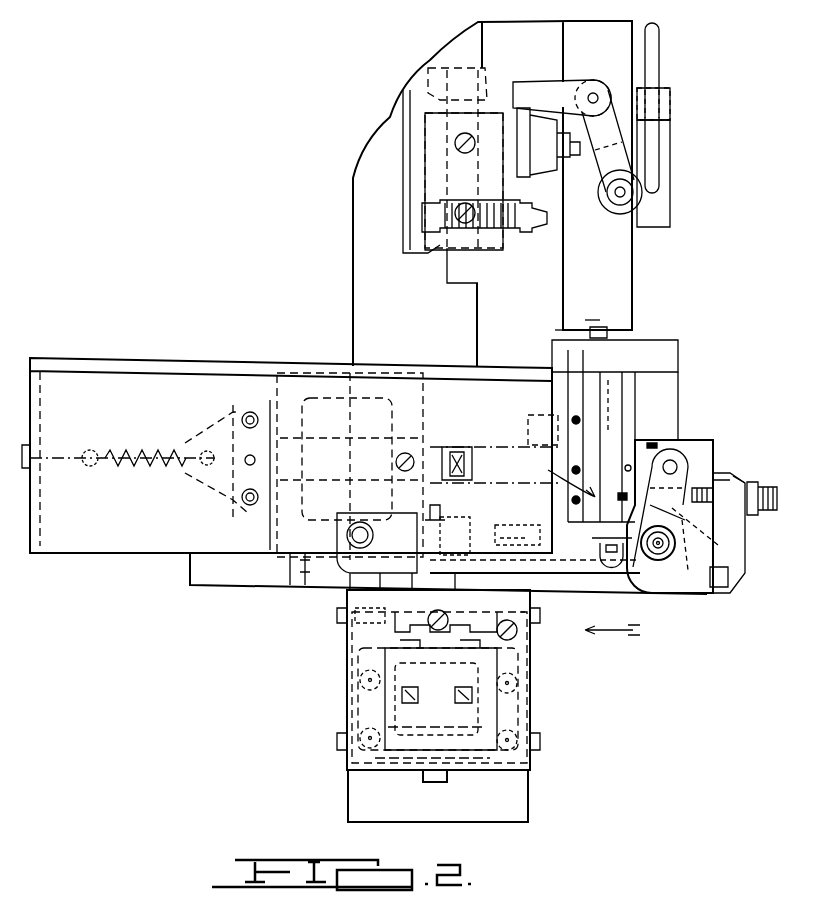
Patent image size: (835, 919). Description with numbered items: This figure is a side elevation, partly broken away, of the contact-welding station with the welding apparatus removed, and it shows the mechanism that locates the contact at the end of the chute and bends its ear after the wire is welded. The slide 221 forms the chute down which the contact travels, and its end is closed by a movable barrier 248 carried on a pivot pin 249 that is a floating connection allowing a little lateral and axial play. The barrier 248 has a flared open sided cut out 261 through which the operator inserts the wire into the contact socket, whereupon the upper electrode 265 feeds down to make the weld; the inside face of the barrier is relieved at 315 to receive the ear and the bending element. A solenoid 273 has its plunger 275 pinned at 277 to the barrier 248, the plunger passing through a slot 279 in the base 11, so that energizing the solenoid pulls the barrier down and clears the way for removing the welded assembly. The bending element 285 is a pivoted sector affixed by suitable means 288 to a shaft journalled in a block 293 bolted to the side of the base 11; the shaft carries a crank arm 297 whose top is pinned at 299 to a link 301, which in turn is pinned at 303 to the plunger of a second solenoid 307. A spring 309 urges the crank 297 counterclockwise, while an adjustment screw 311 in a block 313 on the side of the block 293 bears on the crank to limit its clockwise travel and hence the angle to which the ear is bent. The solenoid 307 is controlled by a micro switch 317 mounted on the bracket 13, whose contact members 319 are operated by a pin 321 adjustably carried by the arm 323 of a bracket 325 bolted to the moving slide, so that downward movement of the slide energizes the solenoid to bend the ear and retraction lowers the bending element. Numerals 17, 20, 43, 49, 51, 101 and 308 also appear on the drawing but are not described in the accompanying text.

The base 11 is at (200, 572).
The bracket 13 is at (530, 300).
The direction arrow 17 is at (572, 555).
The direction arrow 20 is at (697, 438).
The slide 43 is at (675, 398).
The guide 49 is at (620, 332).
The guide bar 51 is at (683, 372).
The plate 101 is at (606, 335).
The slide 221 is at (680, 345).
The movable barrier 248 is at (517, 531).
The pivot pin 249 is at (352, 524).
The flared open sided cut out 261 is at (547, 626).
The upper electrode 265 is at (521, 549).
The solenoid 273 is at (535, 700).
The plunger 275 is at (470, 608).
The pin 277 is at (476, 522).
The slot 279 is at (345, 608).
The bending element 285 is at (728, 575).
The affixing means 288 is at (678, 543).
The block 293 is at (710, 593).
The crank arm 297 is at (680, 520).
The pin 299 is at (678, 470).
The link 301 is at (505, 440).
The pin 303 is at (452, 445).
The solenoid 307 is at (330, 370).
The screw 308 is at (442, 515).
The spring 309 is at (122, 476).
The adjustment screw 311 is at (765, 484).
The block 313 is at (740, 478).
The relief 315 is at (612, 575).
The micro switch 317 is at (525, 90).
The contact members 319 is at (585, 82).
The pin 321 is at (660, 50).
The arm 323 is at (670, 106).
The bracket 325 is at (660, 205).